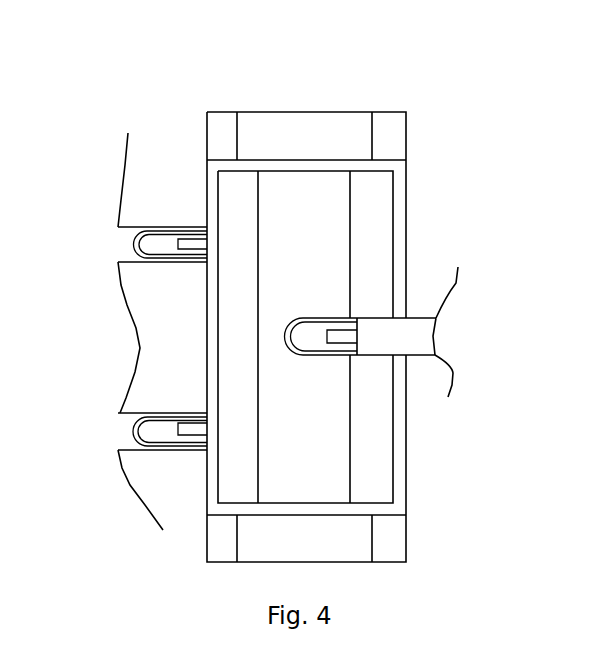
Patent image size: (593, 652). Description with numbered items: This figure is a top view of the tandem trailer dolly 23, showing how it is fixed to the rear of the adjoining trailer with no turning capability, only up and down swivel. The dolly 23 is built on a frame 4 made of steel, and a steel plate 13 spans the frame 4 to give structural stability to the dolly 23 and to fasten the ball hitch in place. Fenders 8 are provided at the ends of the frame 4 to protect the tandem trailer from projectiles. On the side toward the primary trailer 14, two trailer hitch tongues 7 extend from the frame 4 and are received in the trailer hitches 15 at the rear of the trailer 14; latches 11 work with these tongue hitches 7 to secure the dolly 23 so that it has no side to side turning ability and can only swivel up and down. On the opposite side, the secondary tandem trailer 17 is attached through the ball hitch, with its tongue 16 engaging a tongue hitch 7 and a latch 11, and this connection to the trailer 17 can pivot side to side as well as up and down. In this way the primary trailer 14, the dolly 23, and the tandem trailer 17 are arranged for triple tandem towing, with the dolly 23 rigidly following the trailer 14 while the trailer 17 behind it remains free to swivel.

The frame 4 is at (407, 228).
The fenders 8 is at (337, 112).
The steel plate 13 is at (325, 208).
The trailer 14 is at (137, 357).
The trailer hitches 15 is at (128, 232).
The trailer hitch tongues 7 is at (153, 242).
The latches 11 is at (192, 249).
The tongue 16 is at (417, 347).
The trailer 17 is at (452, 295).
The tandem trailer dolly 23 is at (261, 72).